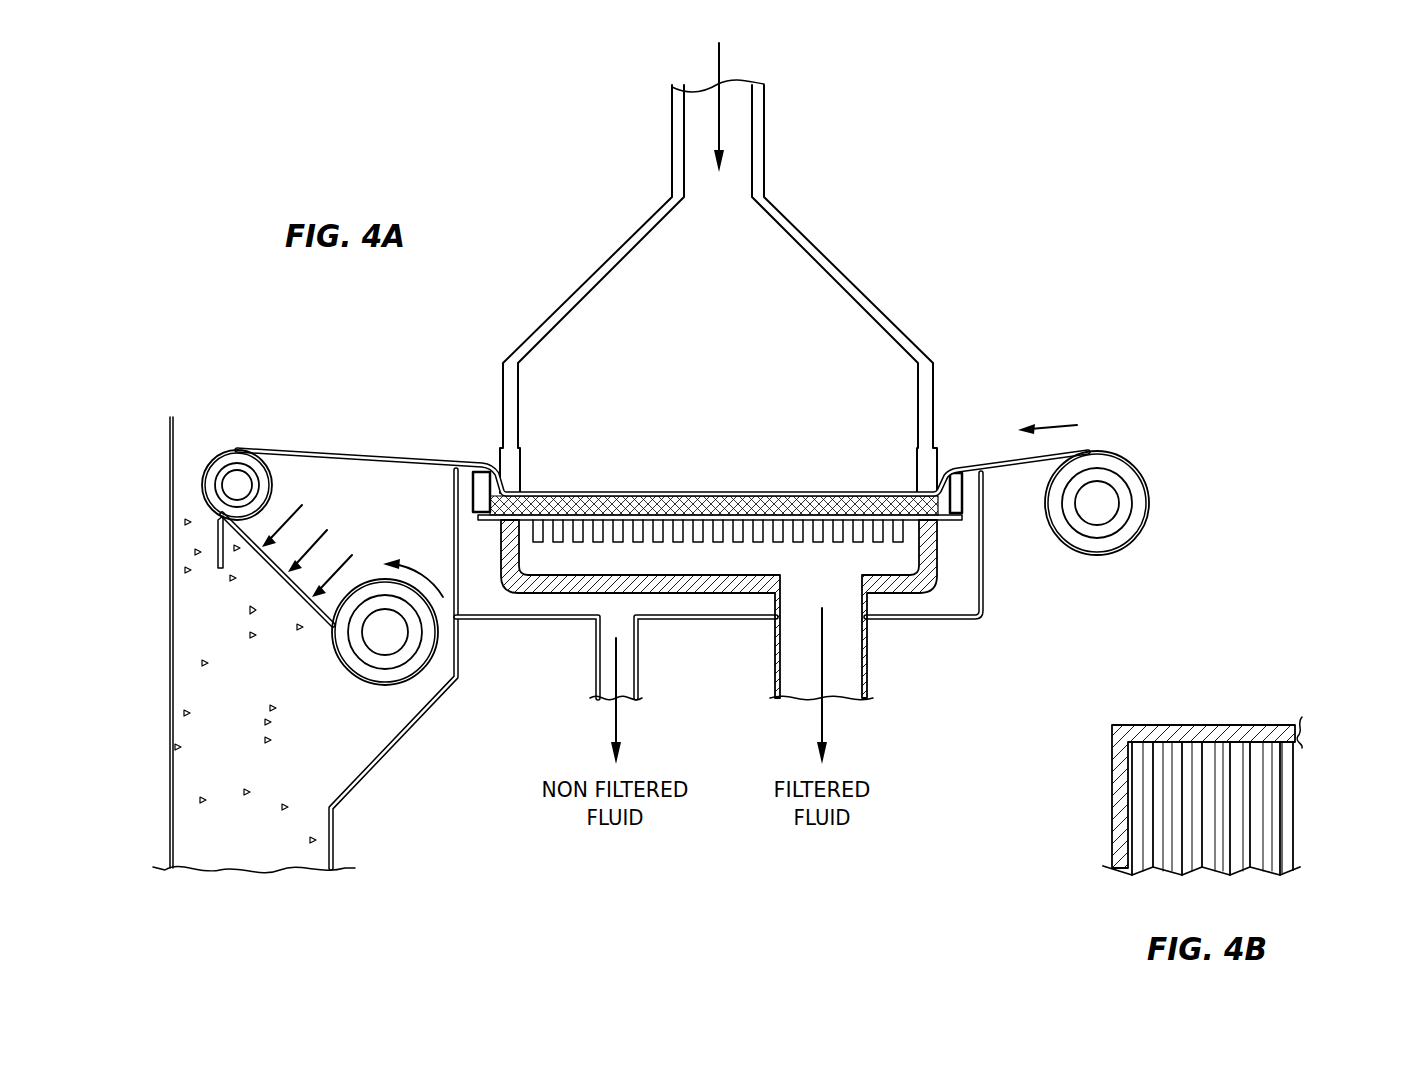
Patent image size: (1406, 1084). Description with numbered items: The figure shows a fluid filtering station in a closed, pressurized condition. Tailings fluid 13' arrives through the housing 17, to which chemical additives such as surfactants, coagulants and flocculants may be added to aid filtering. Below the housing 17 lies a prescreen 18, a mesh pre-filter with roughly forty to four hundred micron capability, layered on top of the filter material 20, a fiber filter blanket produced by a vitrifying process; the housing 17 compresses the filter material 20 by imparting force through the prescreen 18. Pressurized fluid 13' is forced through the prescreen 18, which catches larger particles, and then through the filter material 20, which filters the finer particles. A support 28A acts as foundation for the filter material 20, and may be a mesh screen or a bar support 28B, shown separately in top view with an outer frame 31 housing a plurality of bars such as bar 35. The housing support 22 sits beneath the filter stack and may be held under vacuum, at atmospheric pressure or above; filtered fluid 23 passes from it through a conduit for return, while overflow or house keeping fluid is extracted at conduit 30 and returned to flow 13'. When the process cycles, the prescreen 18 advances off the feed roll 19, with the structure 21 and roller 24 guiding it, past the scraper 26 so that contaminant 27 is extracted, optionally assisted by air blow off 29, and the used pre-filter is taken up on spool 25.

In FIG. 4A, the fluid 13' is at (669, 402).
In FIG. 4A, the housing 17 is at (840, 263).
In FIG. 4A, the prescreen 18 is at (1007, 460).
In FIG. 4A, the feed roll 19 is at (1123, 457).
In FIG. 4A, the filter material 20 is at (942, 518).
In FIG. 4A, the housing 21 is at (947, 620).
In FIG. 4A, the housing support 22 is at (887, 600).
In FIG. 4A, the filtered fluid 23 is at (824, 730).
In FIG. 4A, the guide roller 24 is at (263, 452).
In FIG. 4A, the spool 25 is at (373, 683).
In FIG. 4A, the scraper 26 is at (218, 560).
In FIG. 4A, the contaminant 27 is at (215, 772).
In FIG. 4A, the support 28A is at (740, 542).
In FIG. 4B, the bar support 28B is at (1295, 790).
In FIG. 4A, the air blow off 29 is at (310, 547).
In FIG. 4A, the conduit 30 is at (595, 655).
In FIG. 4B, the outer frame 31 is at (1112, 806).
In FIG. 4B, the bar 35 is at (1295, 840).